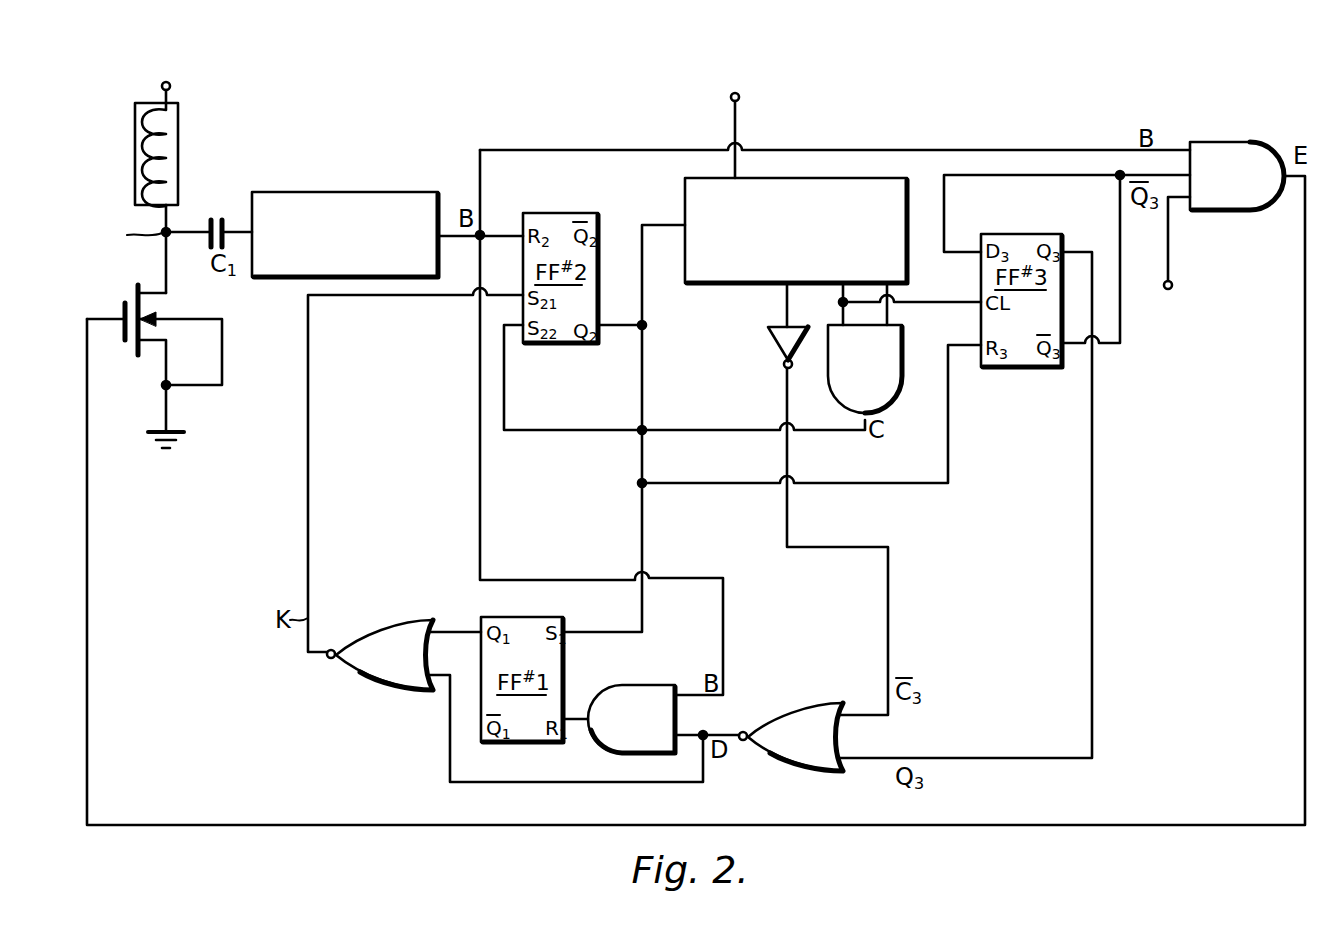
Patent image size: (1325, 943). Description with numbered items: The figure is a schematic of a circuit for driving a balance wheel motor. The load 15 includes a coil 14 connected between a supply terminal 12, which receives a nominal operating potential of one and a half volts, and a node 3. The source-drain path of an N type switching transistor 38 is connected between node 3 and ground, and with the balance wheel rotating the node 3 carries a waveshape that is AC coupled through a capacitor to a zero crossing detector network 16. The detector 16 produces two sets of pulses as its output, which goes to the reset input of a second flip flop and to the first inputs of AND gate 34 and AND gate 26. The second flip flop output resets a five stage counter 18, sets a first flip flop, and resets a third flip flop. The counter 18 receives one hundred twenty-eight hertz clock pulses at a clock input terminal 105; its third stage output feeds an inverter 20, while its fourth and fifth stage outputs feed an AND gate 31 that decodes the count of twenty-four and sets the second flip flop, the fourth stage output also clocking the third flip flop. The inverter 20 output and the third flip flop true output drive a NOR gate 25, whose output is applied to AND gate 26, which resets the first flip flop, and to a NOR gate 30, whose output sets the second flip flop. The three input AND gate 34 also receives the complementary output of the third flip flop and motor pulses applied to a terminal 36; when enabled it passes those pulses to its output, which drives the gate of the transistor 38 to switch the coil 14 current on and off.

The node 3 is at (162, 237).
The terminal 12 is at (172, 86).
The coil 14 is at (172, 146).
The load 15 is at (135, 105).
The zero crossing detector network 16 is at (350, 192).
The 5 stage counter 18 is at (685, 195).
The inverter 20 is at (774, 345).
The NOR gate 25 is at (806, 703).
The AND gate 26 is at (652, 683).
The NOR gate 30 is at (400, 620).
The AND gate 31 is at (903, 375).
The AND gate 34 is at (1232, 141).
The terminal 36 is at (1172, 284).
The switching transistor 38 is at (204, 349).
The clock input terminal 105 is at (731, 99).